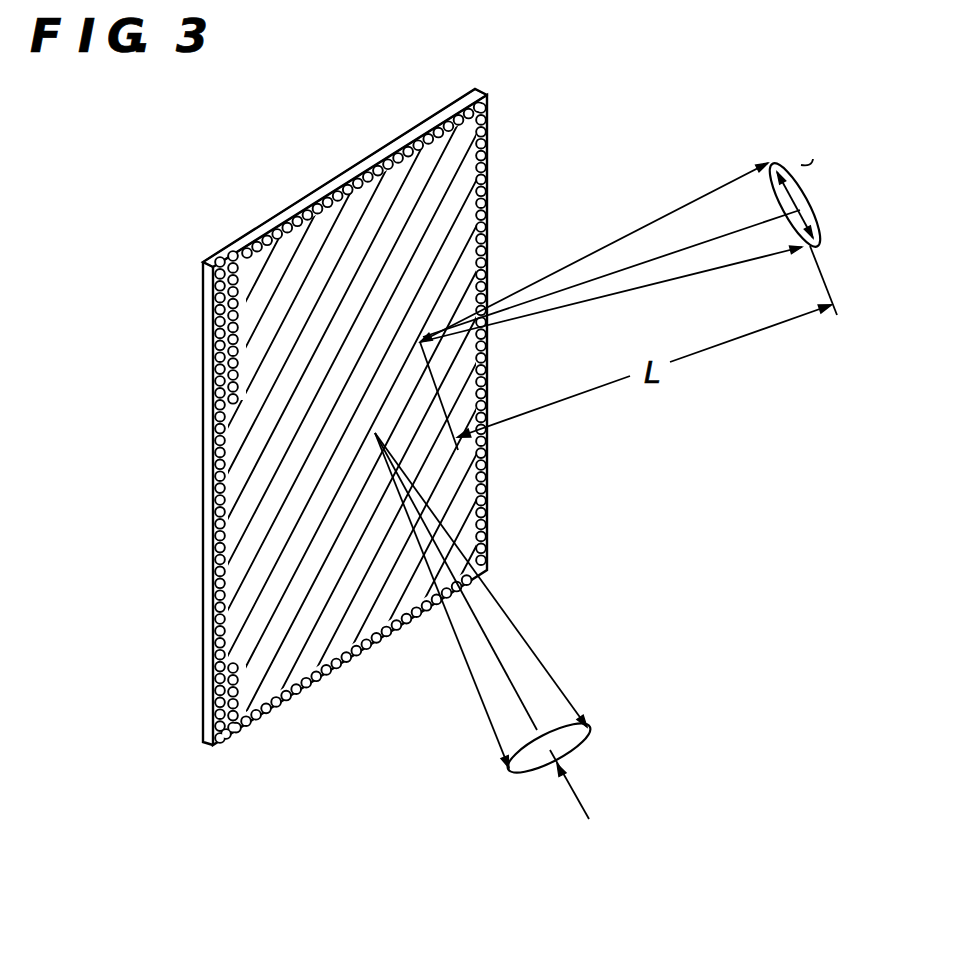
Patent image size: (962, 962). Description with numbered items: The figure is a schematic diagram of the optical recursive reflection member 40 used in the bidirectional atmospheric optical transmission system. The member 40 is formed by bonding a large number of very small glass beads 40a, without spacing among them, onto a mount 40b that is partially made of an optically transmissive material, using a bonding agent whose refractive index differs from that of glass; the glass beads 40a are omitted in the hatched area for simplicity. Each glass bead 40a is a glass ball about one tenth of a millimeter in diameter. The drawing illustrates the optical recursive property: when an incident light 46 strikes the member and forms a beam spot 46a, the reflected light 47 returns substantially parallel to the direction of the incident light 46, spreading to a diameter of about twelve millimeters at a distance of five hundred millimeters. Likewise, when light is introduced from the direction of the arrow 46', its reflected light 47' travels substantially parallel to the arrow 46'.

The optical recursive reflection member 40 is at (510, 50).
The glass beads 40a is at (354, 173).
The mount 40b is at (453, 110).
The beam spot 46a is at (421, 340).
The reflected light 47 is at (611, 252).
The incident light 46 is at (811, 195).
The reflected light 47' is at (482, 600).
The arrow 46' is at (570, 766).